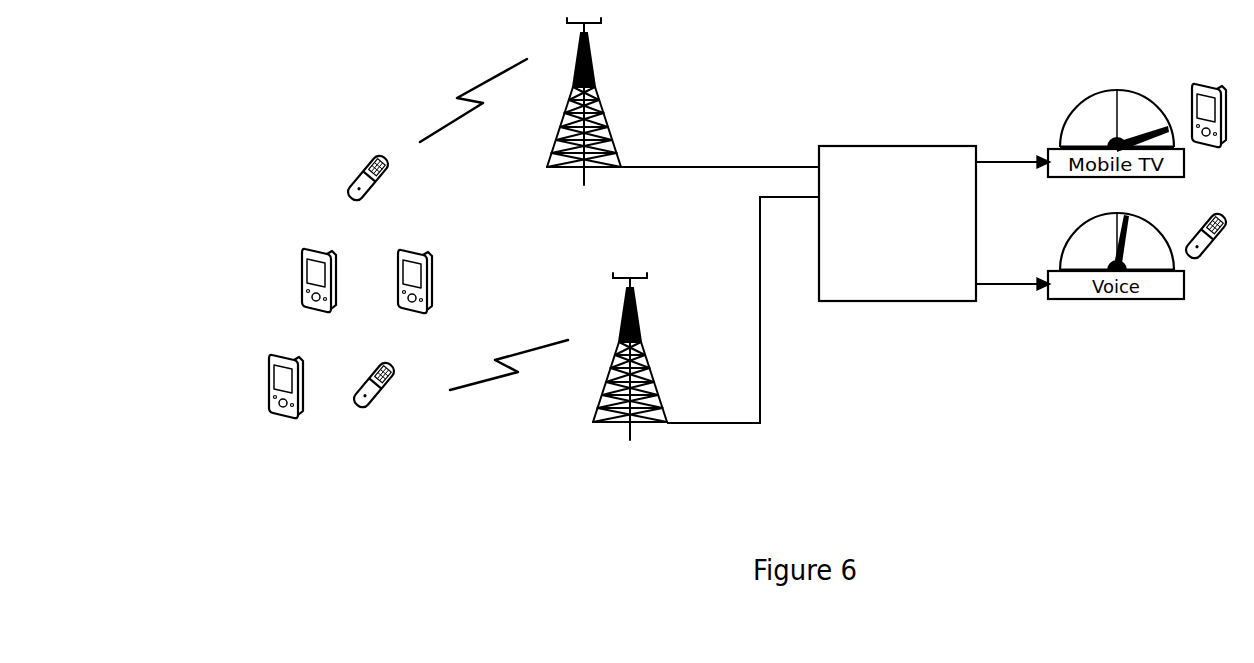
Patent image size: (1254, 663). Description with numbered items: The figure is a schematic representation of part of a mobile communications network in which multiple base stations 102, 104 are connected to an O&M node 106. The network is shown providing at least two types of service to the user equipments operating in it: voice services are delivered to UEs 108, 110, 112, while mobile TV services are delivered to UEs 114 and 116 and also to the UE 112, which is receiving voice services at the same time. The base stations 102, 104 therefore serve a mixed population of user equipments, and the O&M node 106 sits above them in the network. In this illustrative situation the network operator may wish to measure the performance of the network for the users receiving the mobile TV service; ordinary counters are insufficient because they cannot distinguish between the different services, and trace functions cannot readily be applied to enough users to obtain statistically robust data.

The base station 102 is at (592, 80).
The base station 104 is at (640, 342).
The O&M node 106 is at (897, 146).
The user equipment 108 is at (367, 167).
The user equipment 110 is at (303, 273).
The user equipment 112 is at (395, 383).
The user equipment 114 is at (430, 291).
The user equipment 116 is at (270, 378).